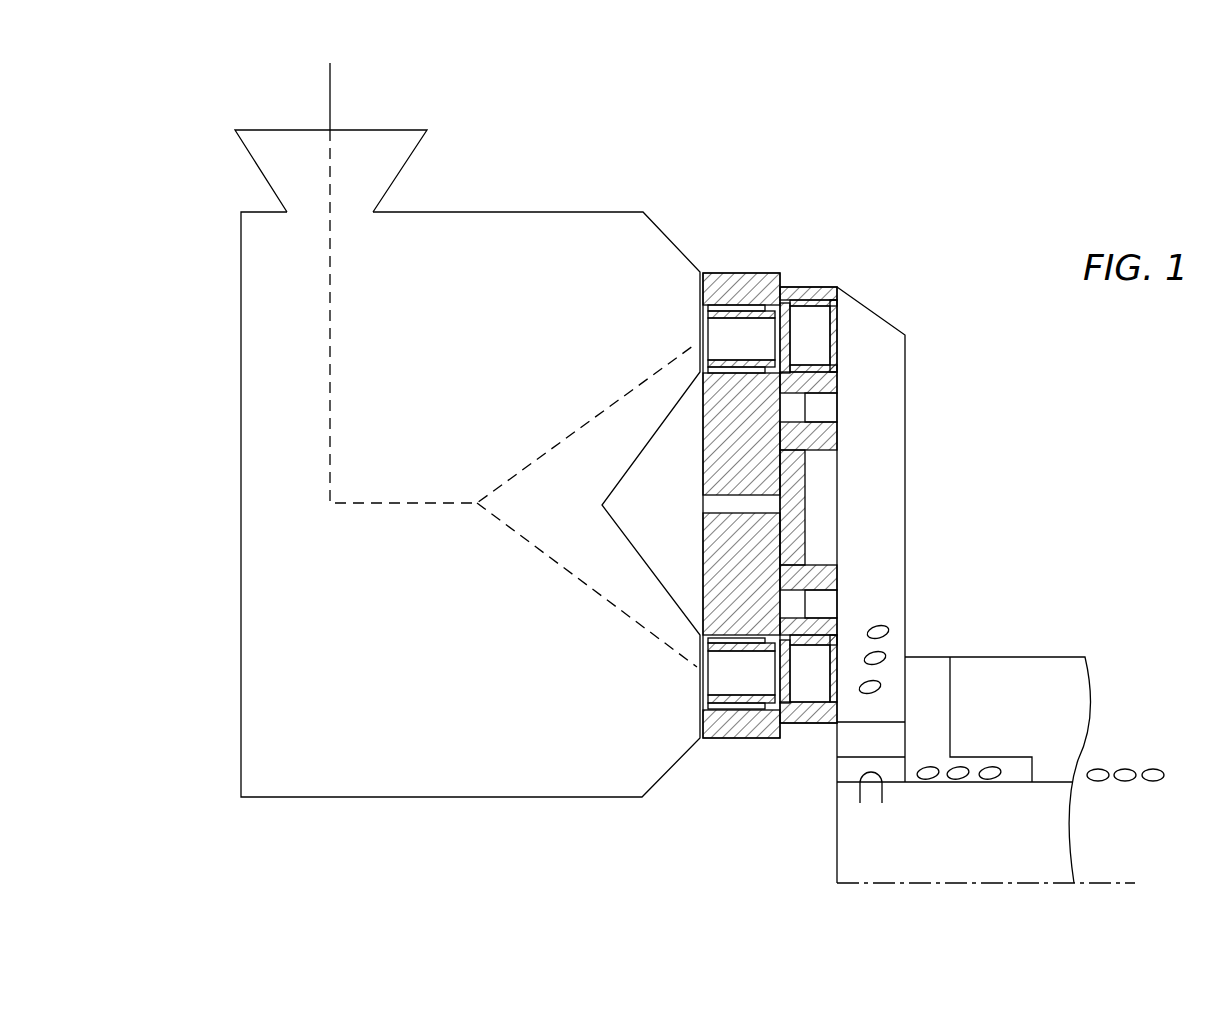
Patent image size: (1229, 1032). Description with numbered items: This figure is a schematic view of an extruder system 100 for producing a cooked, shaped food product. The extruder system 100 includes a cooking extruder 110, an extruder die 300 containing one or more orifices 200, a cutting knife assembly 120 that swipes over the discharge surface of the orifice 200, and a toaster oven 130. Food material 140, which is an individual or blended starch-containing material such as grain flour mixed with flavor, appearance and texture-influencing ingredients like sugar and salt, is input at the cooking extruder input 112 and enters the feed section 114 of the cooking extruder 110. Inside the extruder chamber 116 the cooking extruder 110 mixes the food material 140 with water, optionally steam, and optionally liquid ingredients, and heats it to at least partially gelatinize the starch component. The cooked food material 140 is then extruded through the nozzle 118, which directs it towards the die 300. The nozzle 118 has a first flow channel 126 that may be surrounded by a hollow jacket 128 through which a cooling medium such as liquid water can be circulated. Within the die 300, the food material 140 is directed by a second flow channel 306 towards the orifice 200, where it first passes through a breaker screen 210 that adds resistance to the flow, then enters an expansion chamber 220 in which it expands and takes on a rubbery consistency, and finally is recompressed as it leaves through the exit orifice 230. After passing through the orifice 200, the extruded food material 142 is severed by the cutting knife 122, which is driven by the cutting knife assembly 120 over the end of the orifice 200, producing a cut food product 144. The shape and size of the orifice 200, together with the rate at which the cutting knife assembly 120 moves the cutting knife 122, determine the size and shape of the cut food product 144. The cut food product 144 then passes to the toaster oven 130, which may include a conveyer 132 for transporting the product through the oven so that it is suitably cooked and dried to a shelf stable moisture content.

The extruder system 100 is at (942, 140).
The cooking extruder 110 is at (308, 805).
The cooking extruder input 112 is at (393, 130).
The feed section 114 is at (303, 213).
The extruder chamber 116 is at (300, 657).
The nozzle 118 is at (681, 221).
The cutting knife assembly 120 is at (843, 385).
The cutting knife 122 is at (843, 420).
The first flow channel 126 is at (703, 354).
The hollow jacket 128 is at (703, 306).
The toaster oven 130 is at (1018, 670).
The conveyer 132 is at (1021, 789).
The food material 140 is at (330, 83).
The extruded food material 142 is at (929, 766).
The cut food product 144 is at (1135, 792).
The orifice 200 is at (843, 312).
The breaker screen 210 is at (786, 735).
The expansion chamber 220 is at (810, 692).
The exit orifice 230 is at (843, 666).
The extruder die 300 is at (815, 242).
The second flow channel 306 is at (733, 677).